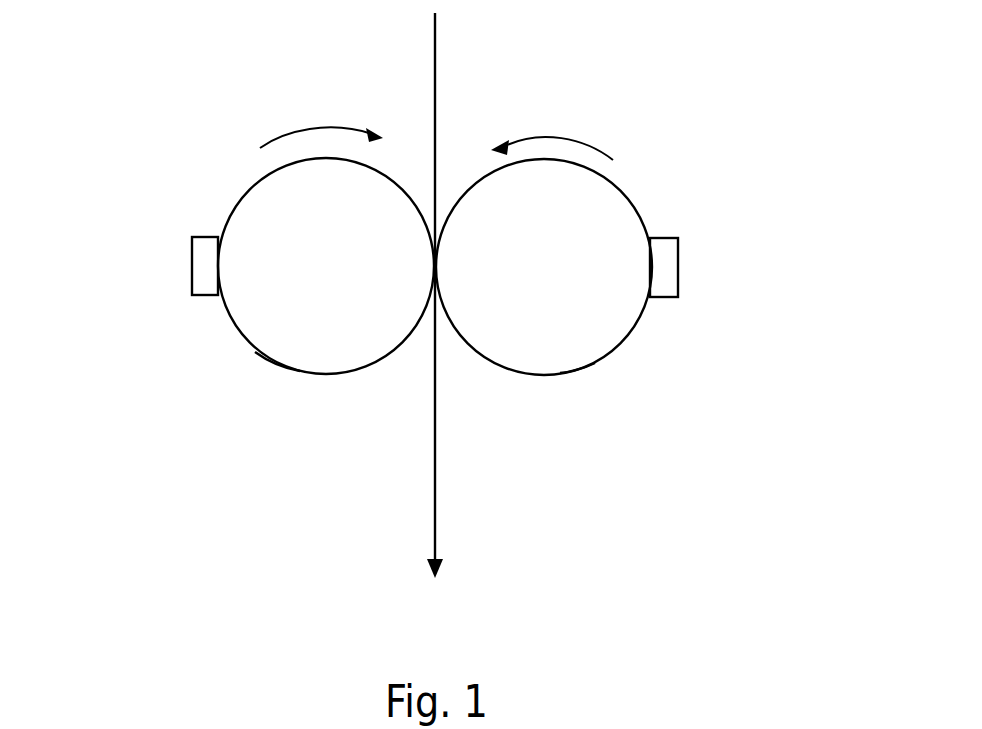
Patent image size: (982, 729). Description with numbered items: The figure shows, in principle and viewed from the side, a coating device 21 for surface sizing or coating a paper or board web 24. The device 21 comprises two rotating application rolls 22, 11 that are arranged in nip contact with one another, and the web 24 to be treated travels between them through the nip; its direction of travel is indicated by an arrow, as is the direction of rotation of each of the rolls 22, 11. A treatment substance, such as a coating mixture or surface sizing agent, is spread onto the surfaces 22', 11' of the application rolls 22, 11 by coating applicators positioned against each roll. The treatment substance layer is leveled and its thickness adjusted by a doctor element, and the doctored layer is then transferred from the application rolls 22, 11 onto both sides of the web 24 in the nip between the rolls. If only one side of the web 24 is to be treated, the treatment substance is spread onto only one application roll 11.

The application roll 11 is at (581, 290).
The surface of application roll 11' is at (643, 403).
The application roll 22 is at (288, 277).
The surface of application roll 22' is at (221, 390).
The paper or board web 24 is at (436, 83).
The coating device 21 is at (571, 96).